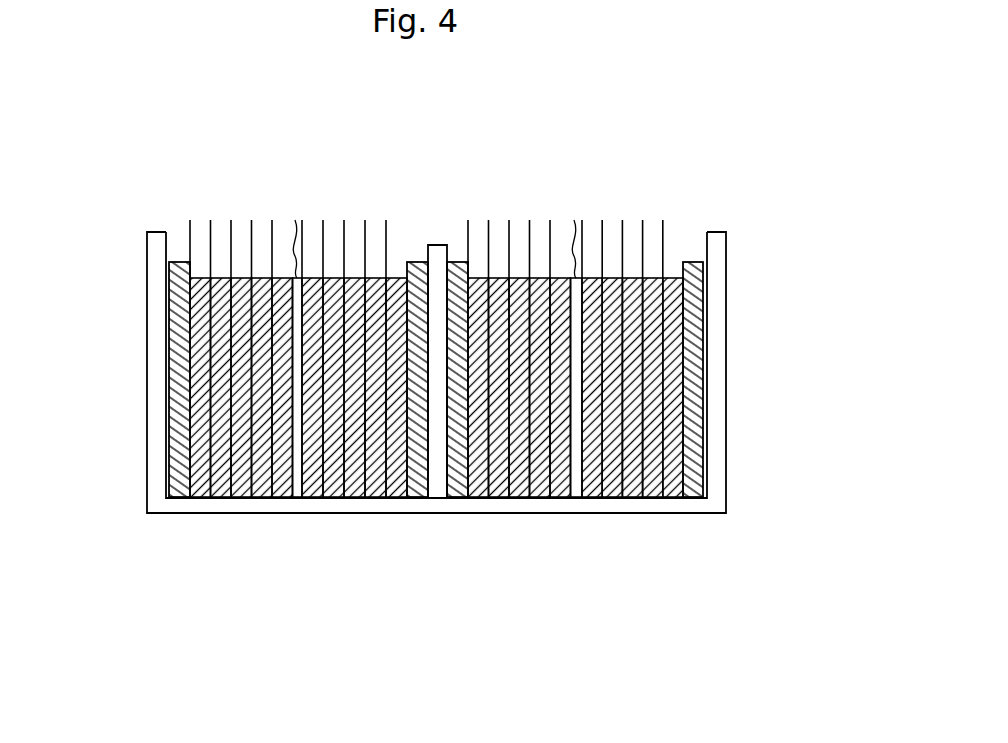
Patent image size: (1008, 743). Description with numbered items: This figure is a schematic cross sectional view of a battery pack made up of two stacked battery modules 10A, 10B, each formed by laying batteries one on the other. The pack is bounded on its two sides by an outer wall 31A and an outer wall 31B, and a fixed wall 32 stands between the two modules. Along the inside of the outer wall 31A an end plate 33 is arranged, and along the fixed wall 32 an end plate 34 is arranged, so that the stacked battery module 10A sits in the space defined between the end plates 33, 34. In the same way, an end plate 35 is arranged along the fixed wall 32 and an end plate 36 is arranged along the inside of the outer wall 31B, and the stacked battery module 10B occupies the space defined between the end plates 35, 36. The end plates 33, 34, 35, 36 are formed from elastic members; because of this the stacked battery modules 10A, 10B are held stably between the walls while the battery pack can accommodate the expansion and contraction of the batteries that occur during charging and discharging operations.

The stacked battery module 10A is at (283, 184).
The stacked battery module 10B is at (553, 196).
The outer wall 31A is at (152, 337).
The outer wall 31B is at (723, 370).
The fixed wall 32 is at (440, 477).
The end plate 33 is at (170, 448).
The end plate 34 is at (413, 460).
The end plate 35 is at (497, 500).
The end plate 36 is at (702, 448).